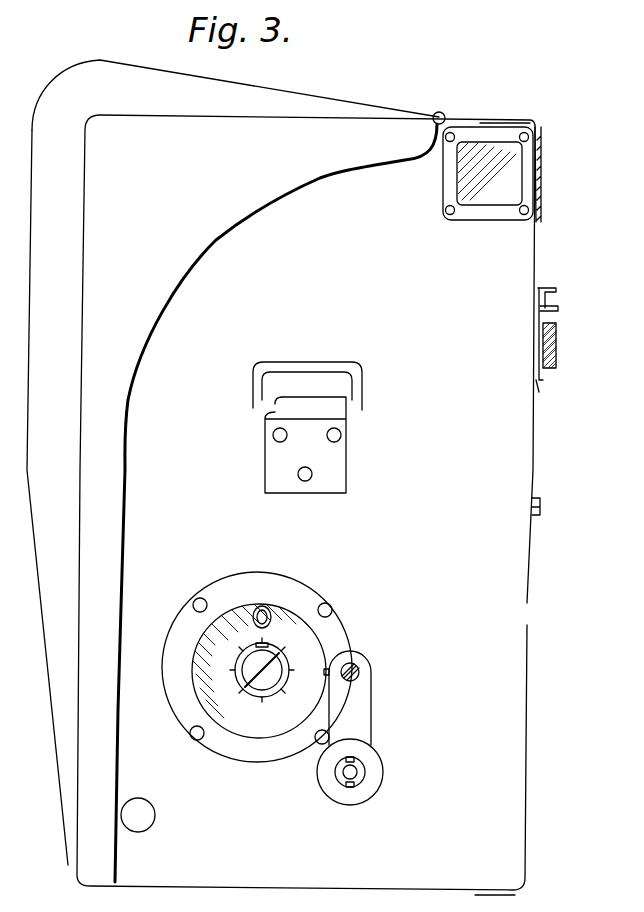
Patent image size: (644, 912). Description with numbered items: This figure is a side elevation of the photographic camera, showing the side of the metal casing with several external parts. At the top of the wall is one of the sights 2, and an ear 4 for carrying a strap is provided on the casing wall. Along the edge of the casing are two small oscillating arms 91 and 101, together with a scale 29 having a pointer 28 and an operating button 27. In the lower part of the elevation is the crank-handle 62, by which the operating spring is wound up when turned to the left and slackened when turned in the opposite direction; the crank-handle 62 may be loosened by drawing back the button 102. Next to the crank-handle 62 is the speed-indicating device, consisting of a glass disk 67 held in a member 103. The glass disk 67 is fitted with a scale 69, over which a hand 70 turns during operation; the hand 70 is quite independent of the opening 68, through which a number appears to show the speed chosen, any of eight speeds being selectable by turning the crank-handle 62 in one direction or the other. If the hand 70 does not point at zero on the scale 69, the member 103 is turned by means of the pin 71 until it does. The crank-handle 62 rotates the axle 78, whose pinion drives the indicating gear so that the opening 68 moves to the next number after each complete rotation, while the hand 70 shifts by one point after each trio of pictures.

The sight 2 is at (512, 158).
The ear 4 is at (337, 367).
The operating button 27 is at (556, 345).
The pointer 28 is at (540, 371).
The scale 29 is at (539, 392).
The crank-handle 62 is at (365, 712).
The glass disk 67 is at (280, 718).
The opening 68 is at (272, 613).
The scale 69 is at (288, 681).
The hand 70 is at (270, 646).
The pin 71 is at (194, 669).
The axle 78 is at (358, 672).
The oscillating arm 91 is at (548, 308).
The oscillating arm 101 is at (550, 287).
The button 102 is at (373, 785).
The member 103 is at (297, 583).